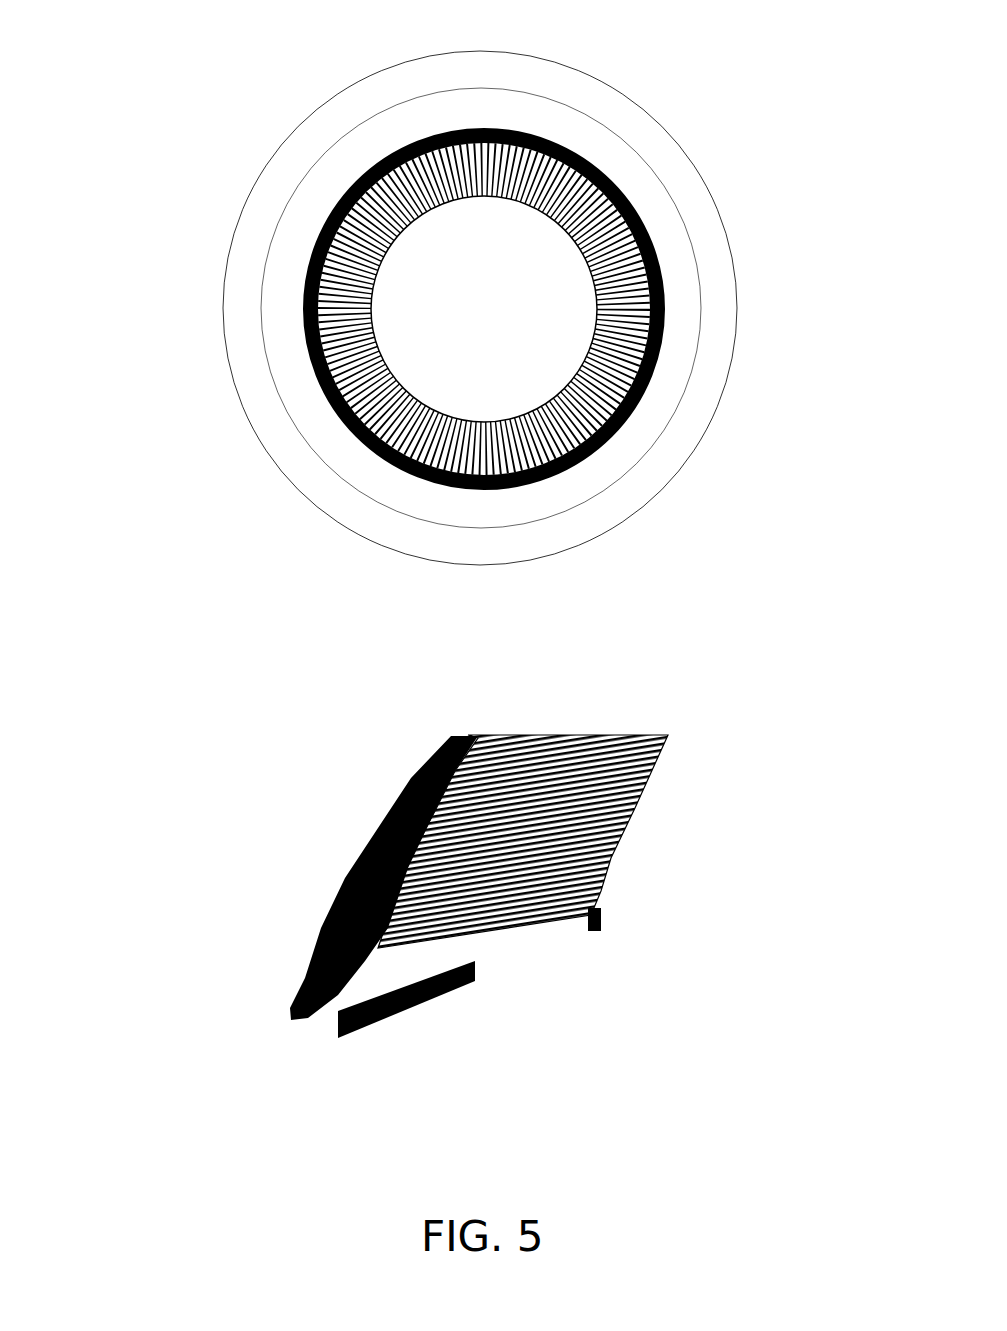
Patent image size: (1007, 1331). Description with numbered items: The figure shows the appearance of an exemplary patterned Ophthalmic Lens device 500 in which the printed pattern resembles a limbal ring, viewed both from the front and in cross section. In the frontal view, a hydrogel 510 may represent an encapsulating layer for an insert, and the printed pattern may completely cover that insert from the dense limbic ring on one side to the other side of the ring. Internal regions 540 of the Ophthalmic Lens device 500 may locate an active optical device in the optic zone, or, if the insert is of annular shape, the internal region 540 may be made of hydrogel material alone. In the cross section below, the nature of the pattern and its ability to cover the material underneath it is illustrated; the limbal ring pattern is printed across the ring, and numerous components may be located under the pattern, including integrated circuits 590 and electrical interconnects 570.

The Ophthalmic Lens device 500 is at (384, 288).
The hydrogel 510 is at (387, 308).
The internal regions 540 is at (633, 266).
The electrical interconnects 570 is at (724, 991).
The integrated circuits 590 is at (505, 1046).